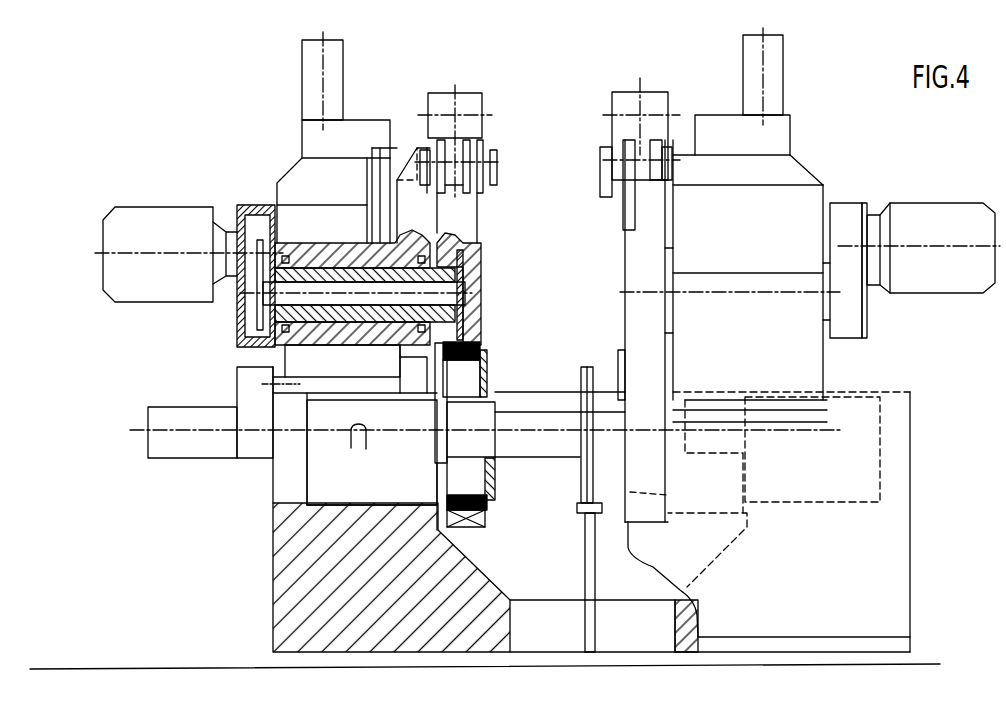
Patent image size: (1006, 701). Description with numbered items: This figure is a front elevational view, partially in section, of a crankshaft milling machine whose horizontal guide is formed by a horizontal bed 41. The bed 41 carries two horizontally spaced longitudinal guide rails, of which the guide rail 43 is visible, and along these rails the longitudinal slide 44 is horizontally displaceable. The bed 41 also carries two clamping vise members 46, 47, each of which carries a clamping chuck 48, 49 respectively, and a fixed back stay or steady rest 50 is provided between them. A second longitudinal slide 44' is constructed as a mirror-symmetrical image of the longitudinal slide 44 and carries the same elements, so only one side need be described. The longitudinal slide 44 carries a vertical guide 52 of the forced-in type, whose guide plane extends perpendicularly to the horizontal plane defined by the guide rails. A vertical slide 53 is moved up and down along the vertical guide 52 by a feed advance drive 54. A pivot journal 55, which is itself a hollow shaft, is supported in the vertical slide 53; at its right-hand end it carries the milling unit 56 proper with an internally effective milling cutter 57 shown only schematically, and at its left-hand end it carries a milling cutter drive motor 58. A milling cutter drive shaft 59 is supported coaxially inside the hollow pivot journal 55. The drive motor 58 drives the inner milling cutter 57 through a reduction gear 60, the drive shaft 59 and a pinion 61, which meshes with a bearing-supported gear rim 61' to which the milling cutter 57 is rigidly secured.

The horizontal bed 41 is at (283, 588).
The longitudinal guide rail 43 is at (537, 397).
The longitudinal slide 44 is at (243, 426).
The second longitudinal slide 44' is at (800, 332).
The clamping vise member 46 is at (396, 464).
The clamping vise member 47 is at (817, 475).
The clamping chuck 48 is at (492, 443).
The clamping chuck 49 is at (716, 441).
The steady rest 50 is at (583, 474).
The vertical guide 52 is at (434, 394).
The vertical slide 53 is at (413, 220).
The feed advance drive 54 is at (343, 58).
The pivot journal 55 is at (313, 273).
The milling unit 56 is at (479, 247).
The milling cutter 57 is at (494, 482).
The milling cutter drive motor 58 is at (157, 230).
The milling cutter drive shaft 59 is at (356, 273).
The reduction gear 60 is at (257, 203).
The pinion 61 is at (491, 295).
The gear rim 61' is at (488, 439).